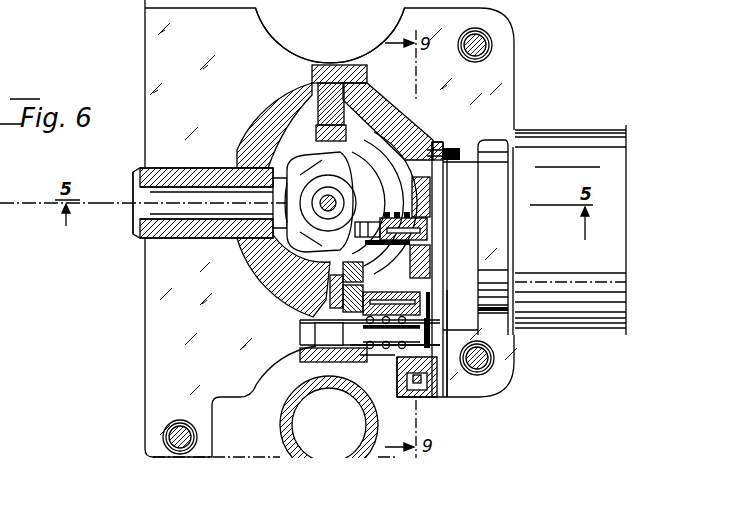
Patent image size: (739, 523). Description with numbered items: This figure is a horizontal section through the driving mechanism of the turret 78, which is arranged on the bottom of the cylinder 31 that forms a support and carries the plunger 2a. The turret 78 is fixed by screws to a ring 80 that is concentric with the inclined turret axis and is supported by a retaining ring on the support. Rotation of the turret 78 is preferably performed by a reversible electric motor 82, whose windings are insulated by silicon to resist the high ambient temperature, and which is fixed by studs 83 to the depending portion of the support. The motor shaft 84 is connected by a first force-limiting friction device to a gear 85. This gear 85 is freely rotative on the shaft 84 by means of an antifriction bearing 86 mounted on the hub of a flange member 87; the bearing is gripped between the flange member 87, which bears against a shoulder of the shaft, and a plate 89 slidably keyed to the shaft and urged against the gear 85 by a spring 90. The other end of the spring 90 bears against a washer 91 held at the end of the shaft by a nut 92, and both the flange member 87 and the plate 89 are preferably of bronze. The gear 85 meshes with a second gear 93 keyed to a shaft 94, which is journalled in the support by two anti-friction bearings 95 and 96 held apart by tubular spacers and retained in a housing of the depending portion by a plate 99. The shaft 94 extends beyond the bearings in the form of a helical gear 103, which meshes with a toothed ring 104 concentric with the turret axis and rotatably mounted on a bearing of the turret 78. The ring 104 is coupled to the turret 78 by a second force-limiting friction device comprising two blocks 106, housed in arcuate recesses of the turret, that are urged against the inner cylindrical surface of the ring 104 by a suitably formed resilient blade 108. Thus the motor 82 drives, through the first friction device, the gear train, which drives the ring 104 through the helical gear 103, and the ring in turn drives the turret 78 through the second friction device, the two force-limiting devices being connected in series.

The plunger 2a is at (185, 240).
The cylinder 31 is at (378, 140).
The turret 78 is at (262, 273).
The ring 80 is at (358, 130).
The reversible electric motor 82 is at (558, 130).
The studs 83 is at (455, 148).
The shaft 84 is at (386, 250).
The gear 85 is at (432, 188).
The antifriction bearing 86 is at (428, 212).
The flange member 87 is at (437, 270).
The plate 89 is at (406, 262).
The spring 90 is at (390, 218).
The washer 91 is at (370, 221).
The nut 92 is at (355, 232).
The second gear 93 is at (440, 308).
The shaft 94 is at (343, 340).
The anti-friction bearing 95 is at (345, 386).
The anti-friction bearing 96 is at (397, 370).
The plate 99 is at (460, 342).
The helical gear 103 is at (320, 362).
The toothed ring 104 is at (312, 320).
The blocks 106 is at (318, 117).
The resilient blade 108 is at (316, 133).